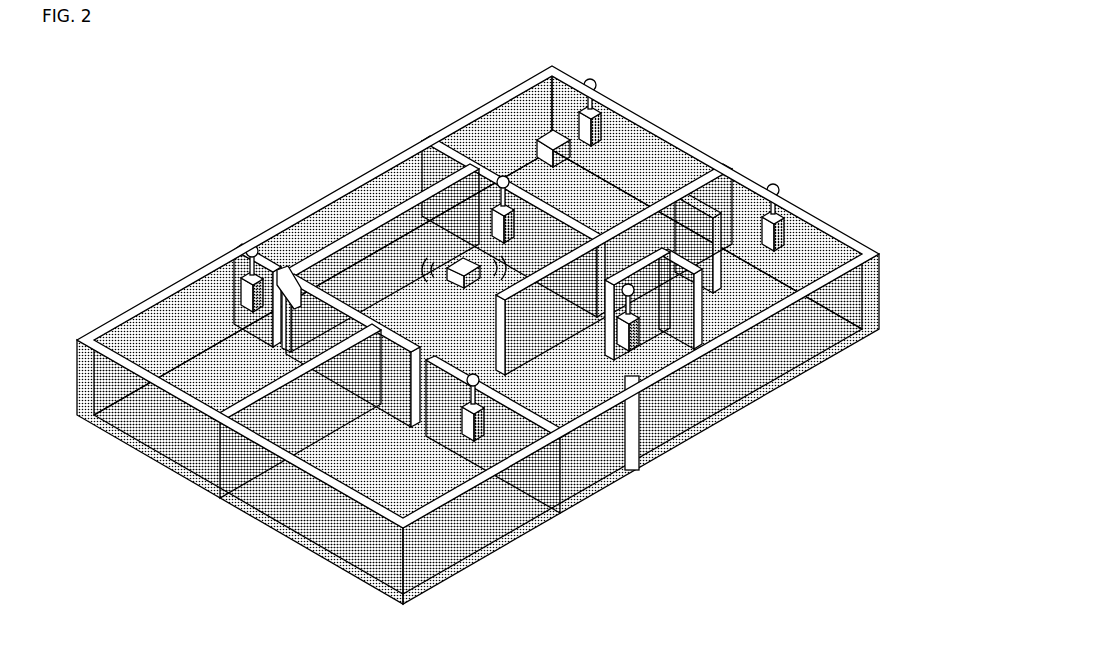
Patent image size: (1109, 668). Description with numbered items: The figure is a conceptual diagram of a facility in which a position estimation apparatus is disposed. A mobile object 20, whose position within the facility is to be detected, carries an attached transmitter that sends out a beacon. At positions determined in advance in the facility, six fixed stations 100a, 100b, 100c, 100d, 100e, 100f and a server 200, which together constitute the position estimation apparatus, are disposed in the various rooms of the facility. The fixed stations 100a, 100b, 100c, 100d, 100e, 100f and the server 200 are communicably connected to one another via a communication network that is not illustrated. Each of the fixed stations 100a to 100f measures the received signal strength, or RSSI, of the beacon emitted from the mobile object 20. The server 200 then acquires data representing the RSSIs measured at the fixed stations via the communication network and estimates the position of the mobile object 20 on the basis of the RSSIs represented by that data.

The mobile object 20 is at (452, 260).
The fixed station 100a is at (490, 206).
The fixed station 100b is at (243, 280).
The fixed station 100c is at (476, 442).
The fixed station 100d is at (632, 352).
The fixed station 100e is at (788, 222).
The fixed station 100f is at (604, 114).
The server 200 is at (540, 128).